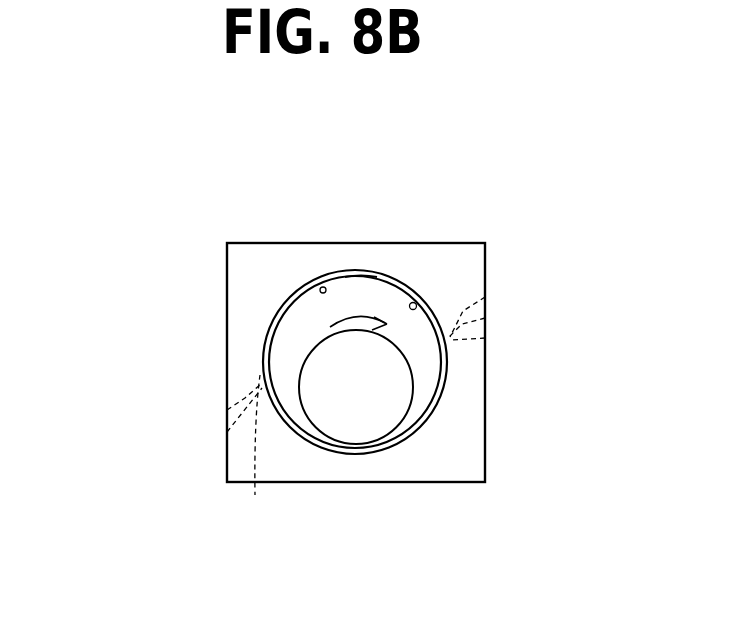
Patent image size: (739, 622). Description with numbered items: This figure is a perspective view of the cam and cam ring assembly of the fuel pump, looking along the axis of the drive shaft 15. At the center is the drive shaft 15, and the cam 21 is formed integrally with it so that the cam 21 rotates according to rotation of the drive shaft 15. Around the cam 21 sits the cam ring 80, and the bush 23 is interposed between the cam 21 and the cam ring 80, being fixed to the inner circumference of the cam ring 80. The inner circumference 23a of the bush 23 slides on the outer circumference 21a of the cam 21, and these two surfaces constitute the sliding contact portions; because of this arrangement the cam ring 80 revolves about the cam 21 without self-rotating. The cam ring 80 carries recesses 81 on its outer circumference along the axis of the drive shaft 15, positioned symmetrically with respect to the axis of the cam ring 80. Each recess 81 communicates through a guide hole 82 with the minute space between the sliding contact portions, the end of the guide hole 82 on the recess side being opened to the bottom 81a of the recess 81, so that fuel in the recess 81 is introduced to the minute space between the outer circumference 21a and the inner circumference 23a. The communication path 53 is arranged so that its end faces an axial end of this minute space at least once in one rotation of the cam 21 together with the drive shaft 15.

The drive shaft 15 is at (378, 397).
The cam 21 is at (292, 327).
The outer circumference of the cam 21a is at (361, 277).
The bush 23 is at (263, 367).
The inner circumference of the bush 23a is at (323, 287).
The communication path 53 is at (418, 298).
The cam ring 80 is at (227, 288).
The recess 81 is at (227, 432).
The bottom of the recess 81a is at (227, 410).
The guide hole 82 is at (565, 366).